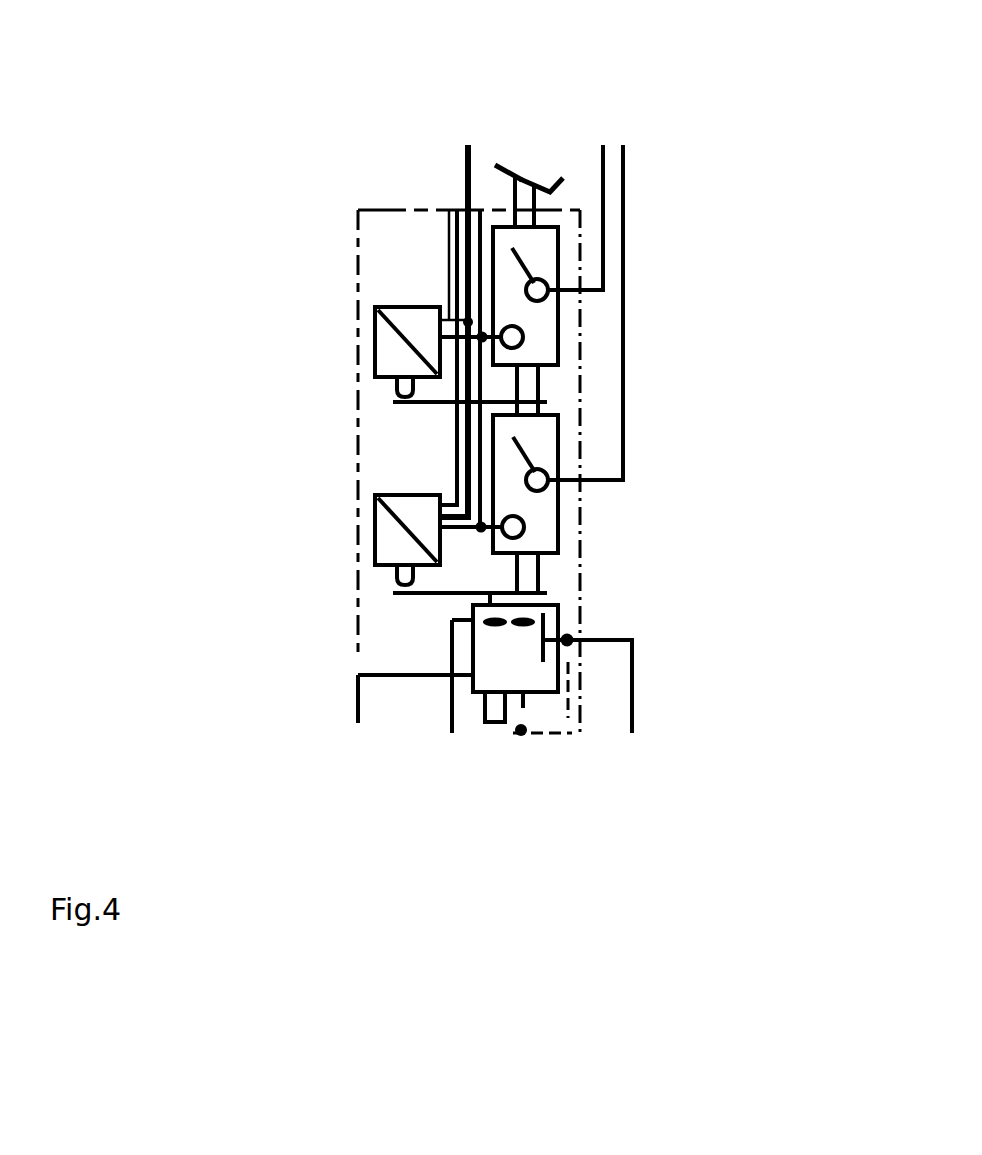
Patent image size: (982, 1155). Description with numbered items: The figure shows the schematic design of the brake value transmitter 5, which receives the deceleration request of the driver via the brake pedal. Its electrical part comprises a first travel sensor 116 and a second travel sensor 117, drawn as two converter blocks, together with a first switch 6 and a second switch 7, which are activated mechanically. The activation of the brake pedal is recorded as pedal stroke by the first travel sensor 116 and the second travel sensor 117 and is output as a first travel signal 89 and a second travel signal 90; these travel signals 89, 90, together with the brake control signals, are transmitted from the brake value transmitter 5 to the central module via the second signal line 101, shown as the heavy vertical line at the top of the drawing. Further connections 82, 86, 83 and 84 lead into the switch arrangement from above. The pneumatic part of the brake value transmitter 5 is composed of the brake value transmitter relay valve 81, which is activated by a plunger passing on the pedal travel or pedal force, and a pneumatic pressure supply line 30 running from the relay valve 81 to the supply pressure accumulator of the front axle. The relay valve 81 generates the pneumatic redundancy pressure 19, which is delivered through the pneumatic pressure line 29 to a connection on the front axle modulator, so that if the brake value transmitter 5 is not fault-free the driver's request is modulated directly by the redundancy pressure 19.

The brake value transmitter 5 is at (437, 86).
The second signal line 101 is at (465, 152).
The second travel signal 90 is at (465, 170).
The first travel signal 89 is at (465, 188).
The input terminal 82 is at (495, 165).
The connection 86 is at (546, 188).
The supply line 83 is at (600, 143).
The supply line 84 is at (622, 145).
The first switch 6 is at (558, 318).
The second switch 7 is at (558, 508).
The first travel sensor 116 is at (375, 340).
The second travel sensor 117 is at (375, 525).
The brake value transmitter relay valve 81 is at (558, 618).
The pneumatic pressure supply line 30 is at (358, 675).
The pneumatic pressure line 29 is at (632, 688).
The pneumatic redundancy pressure 19 is at (632, 722).